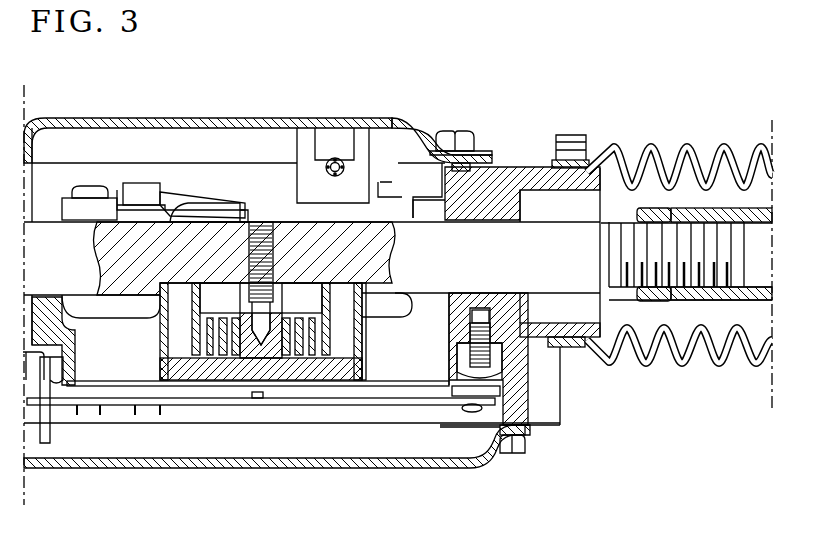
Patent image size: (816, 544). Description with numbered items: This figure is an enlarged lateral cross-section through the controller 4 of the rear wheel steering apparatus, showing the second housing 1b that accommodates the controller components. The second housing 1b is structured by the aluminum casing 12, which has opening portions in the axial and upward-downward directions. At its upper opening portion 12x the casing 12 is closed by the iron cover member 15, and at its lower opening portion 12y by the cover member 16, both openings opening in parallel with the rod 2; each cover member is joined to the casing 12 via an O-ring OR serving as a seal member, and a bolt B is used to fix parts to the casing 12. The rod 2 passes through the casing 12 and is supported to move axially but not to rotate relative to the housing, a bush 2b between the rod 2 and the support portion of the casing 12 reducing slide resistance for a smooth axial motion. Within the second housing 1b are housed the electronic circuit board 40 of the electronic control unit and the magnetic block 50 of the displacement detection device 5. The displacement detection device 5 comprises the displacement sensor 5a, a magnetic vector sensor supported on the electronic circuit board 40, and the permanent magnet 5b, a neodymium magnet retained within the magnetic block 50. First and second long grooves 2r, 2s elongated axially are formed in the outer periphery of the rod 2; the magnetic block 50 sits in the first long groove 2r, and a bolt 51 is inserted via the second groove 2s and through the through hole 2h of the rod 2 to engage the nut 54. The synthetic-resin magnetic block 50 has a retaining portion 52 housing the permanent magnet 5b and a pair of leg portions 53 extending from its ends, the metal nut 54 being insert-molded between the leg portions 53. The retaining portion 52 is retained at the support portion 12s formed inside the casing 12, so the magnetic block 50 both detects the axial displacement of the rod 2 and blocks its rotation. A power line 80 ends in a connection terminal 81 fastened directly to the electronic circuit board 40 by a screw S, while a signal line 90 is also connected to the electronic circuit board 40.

The second housing 1b is at (115, 112).
The cover member 15 is at (408, 148).
The opening portion 12x is at (405, 162).
The O-ring OR is at (470, 166).
The controller 4 is at (387, 136).
The signal line 90 is at (340, 157).
The screw S is at (82, 186).
The connection terminal 81 is at (142, 183).
The second long groove 2s is at (180, 194).
The power line 80 is at (199, 203).
The through hole 2h is at (246, 203).
The rod 2 is at (497, 237).
The first long groove 2r is at (176, 335).
The casing 12 is at (530, 165).
The support portion 12s is at (470, 390).
The opening portion 12y is at (491, 459).
The bolt B is at (520, 455).
The cover member 16 is at (474, 466).
The bush 2b is at (525, 217).
The displacement detection device 5 is at (220, 420).
The permanent magnet 5b is at (194, 370).
The bolt 51 is at (263, 222).
The nut 54 is at (273, 360).
The displacement sensor 5a is at (258, 400).
The electronic circuit board 40 is at (350, 406).
The magnetic block 50 is at (408, 387).
The retaining portion 52 is at (366, 354).
The leg portion 53 is at (163, 330).